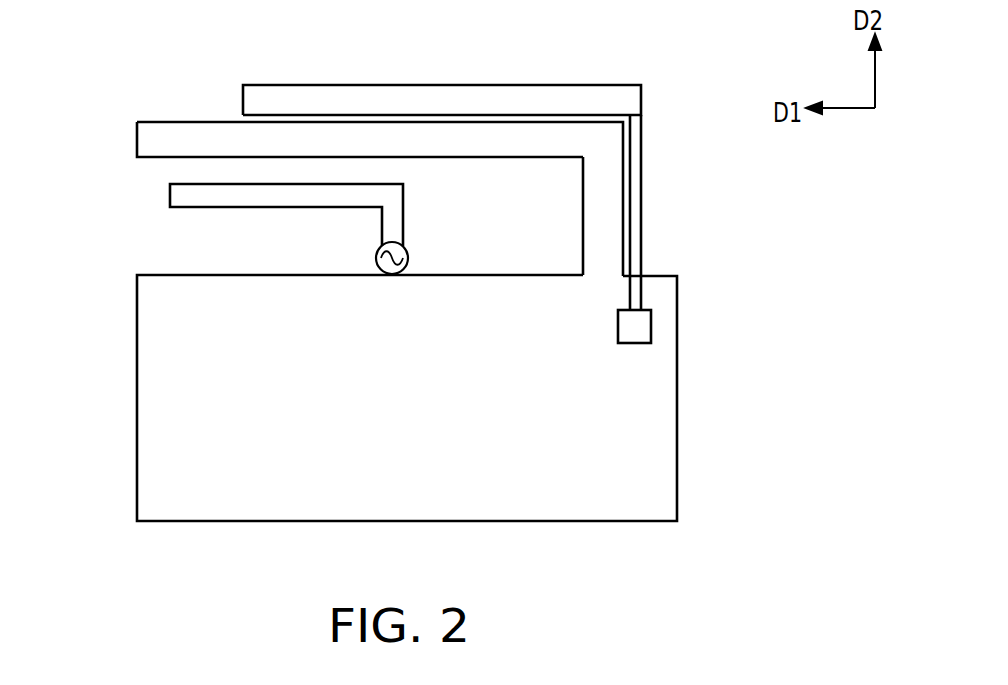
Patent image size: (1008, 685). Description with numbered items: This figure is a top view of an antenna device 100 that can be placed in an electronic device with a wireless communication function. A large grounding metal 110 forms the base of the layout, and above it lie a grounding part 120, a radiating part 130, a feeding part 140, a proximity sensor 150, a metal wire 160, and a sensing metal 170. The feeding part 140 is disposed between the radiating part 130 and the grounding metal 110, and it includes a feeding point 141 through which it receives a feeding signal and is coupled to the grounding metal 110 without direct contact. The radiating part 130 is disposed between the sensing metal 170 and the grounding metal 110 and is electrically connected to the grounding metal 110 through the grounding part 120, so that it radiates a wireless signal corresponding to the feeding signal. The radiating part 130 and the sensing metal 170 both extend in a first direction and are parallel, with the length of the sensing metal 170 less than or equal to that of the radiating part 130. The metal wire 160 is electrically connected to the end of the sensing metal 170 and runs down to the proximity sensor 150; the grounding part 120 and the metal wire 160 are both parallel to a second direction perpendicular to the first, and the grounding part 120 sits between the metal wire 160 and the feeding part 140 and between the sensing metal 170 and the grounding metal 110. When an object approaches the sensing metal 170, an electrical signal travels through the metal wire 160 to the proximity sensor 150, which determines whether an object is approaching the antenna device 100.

The antenna device 100 is at (421, 318).
The grounding metal 110 is at (135, 414).
The grounding part 120 is at (580, 208).
The radiating part 130 is at (150, 142).
The feeding part 140 is at (183, 197).
The feeding point 141 is at (380, 253).
The proximity sensor 150 is at (651, 327).
The metal wire 160 is at (636, 165).
The sensing metal 170 is at (637, 96).